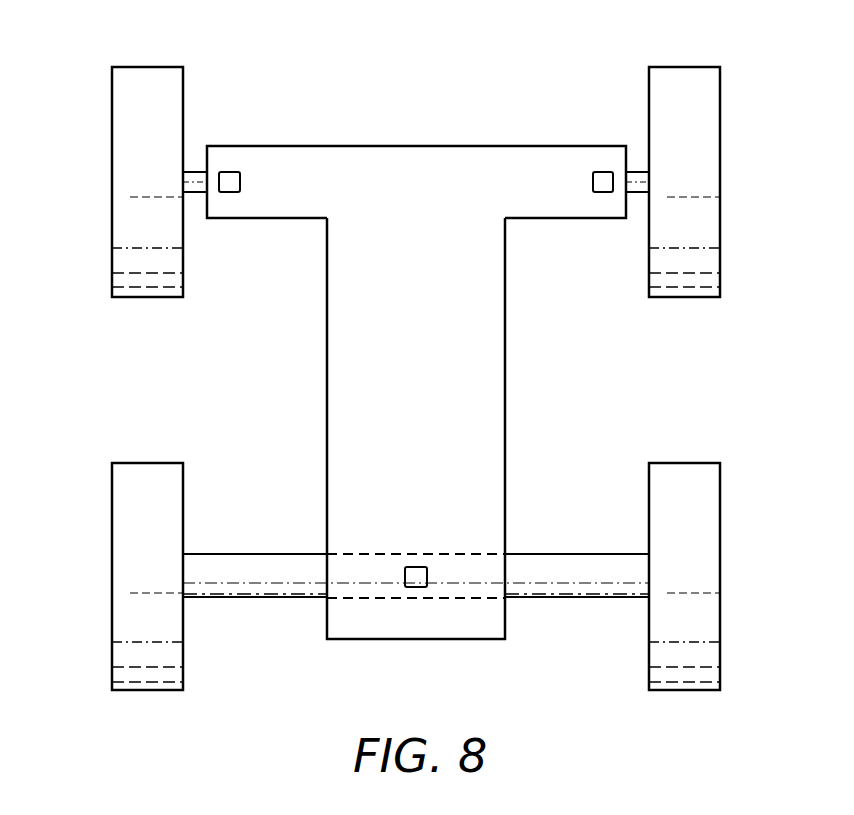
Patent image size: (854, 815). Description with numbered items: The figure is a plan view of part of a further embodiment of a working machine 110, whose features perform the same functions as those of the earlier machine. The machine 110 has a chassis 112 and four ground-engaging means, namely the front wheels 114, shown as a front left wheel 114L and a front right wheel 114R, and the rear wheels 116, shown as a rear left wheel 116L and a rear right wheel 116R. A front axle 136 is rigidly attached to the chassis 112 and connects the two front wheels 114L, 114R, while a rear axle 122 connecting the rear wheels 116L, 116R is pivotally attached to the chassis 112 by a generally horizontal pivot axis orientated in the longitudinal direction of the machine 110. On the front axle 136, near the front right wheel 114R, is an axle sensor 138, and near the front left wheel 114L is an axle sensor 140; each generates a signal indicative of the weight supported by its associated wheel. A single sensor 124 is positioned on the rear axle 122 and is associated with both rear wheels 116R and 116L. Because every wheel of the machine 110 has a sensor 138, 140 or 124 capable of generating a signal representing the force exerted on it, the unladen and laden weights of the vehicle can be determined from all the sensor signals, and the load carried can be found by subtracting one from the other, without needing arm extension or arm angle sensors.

The working machine 110 is at (677, 389).
The chassis 112 is at (496, 352).
The front wheel 114 is at (143, 66).
The front left wheel 114L is at (121, 182).
The front right wheel 114R is at (712, 180).
The rear wheel 116 is at (143, 693).
The rear left wheel 116L is at (121, 577).
The rear right wheel 116R is at (712, 575).
The rear axle 122 is at (578, 600).
The sensor 124 is at (410, 568).
The front axle 136 is at (283, 158).
The axle sensor 138 is at (598, 175).
The axle sensor 140 is at (226, 175).